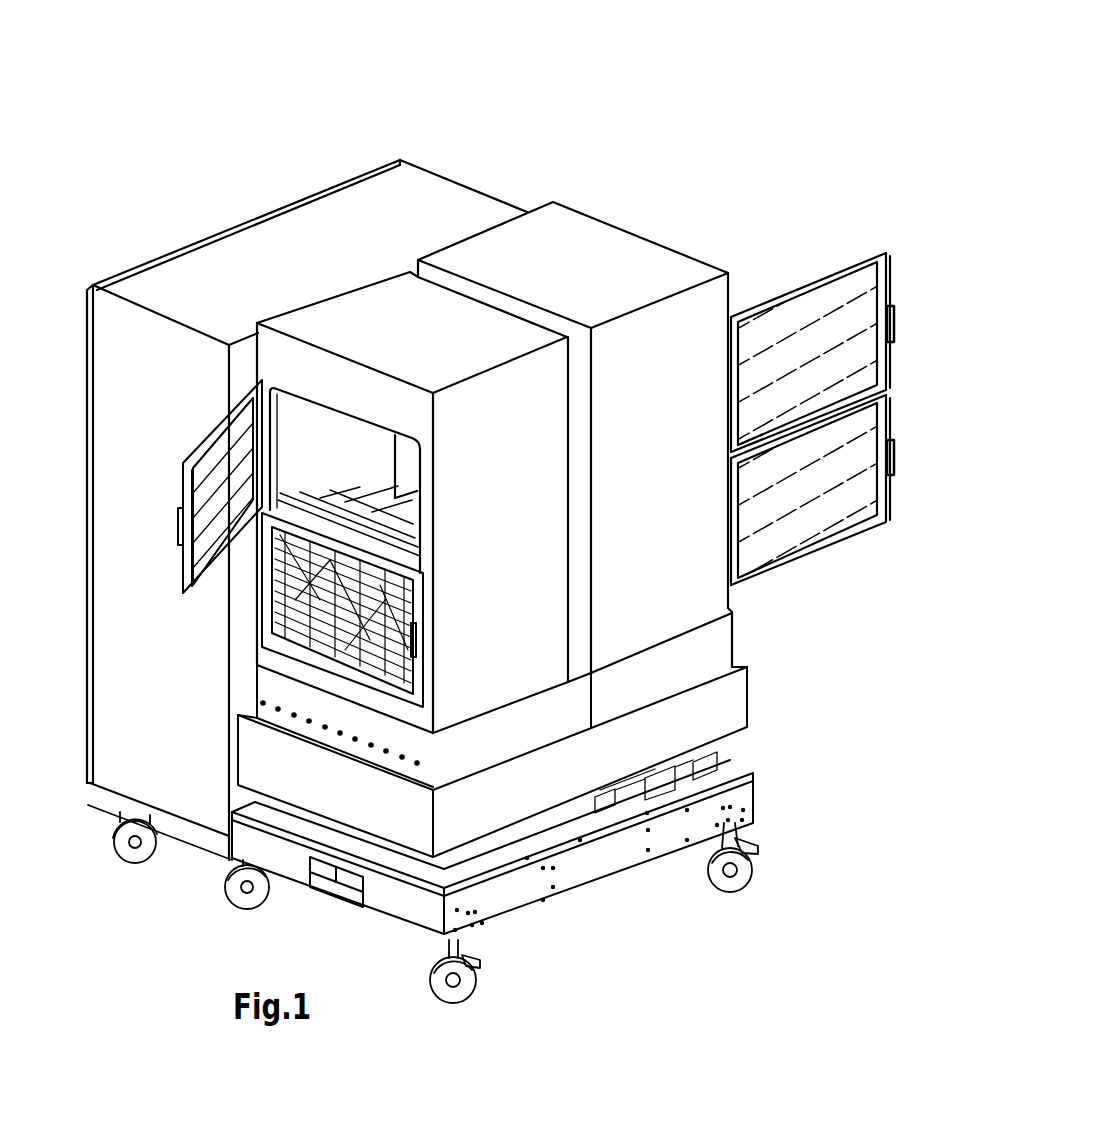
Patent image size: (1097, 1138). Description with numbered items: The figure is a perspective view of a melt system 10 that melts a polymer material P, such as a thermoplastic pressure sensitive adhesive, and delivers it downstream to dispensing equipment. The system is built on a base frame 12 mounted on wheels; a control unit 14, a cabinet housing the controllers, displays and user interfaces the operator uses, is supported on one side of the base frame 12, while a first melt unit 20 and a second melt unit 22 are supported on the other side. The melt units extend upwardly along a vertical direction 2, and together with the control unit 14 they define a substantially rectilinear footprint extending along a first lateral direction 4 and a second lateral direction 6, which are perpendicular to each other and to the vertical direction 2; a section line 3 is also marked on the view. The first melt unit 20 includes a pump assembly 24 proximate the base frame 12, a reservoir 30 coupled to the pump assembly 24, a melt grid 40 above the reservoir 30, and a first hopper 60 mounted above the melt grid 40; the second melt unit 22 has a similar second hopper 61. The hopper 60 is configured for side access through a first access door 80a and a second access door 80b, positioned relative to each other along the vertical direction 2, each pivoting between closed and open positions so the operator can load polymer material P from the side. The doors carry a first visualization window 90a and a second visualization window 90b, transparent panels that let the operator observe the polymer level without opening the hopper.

The melt system 10 is at (258, 175).
The base frame 12 is at (203, 842).
The control unit 14 is at (143, 658).
The first melt unit 20 is at (349, 425).
The second melt unit 22 is at (656, 395).
The pump assembly 24 is at (328, 906).
The reservoir 30 is at (492, 882).
The melt grid 40 is at (502, 730).
The first hopper 60 is at (506, 514).
The second hopper 61 is at (659, 470).
The first access door 80a is at (185, 480).
The second access door 80b is at (397, 610).
The first visualization window 90a is at (210, 495).
The second visualization window 90b is at (425, 589).
The polymer material P is at (368, 512).
The vertical direction 2 is at (816, 99).
The first lateral direction 4 is at (816, 99).
The second lateral direction 6 is at (816, 99).
The section line 3- 3 is at (409, 313).